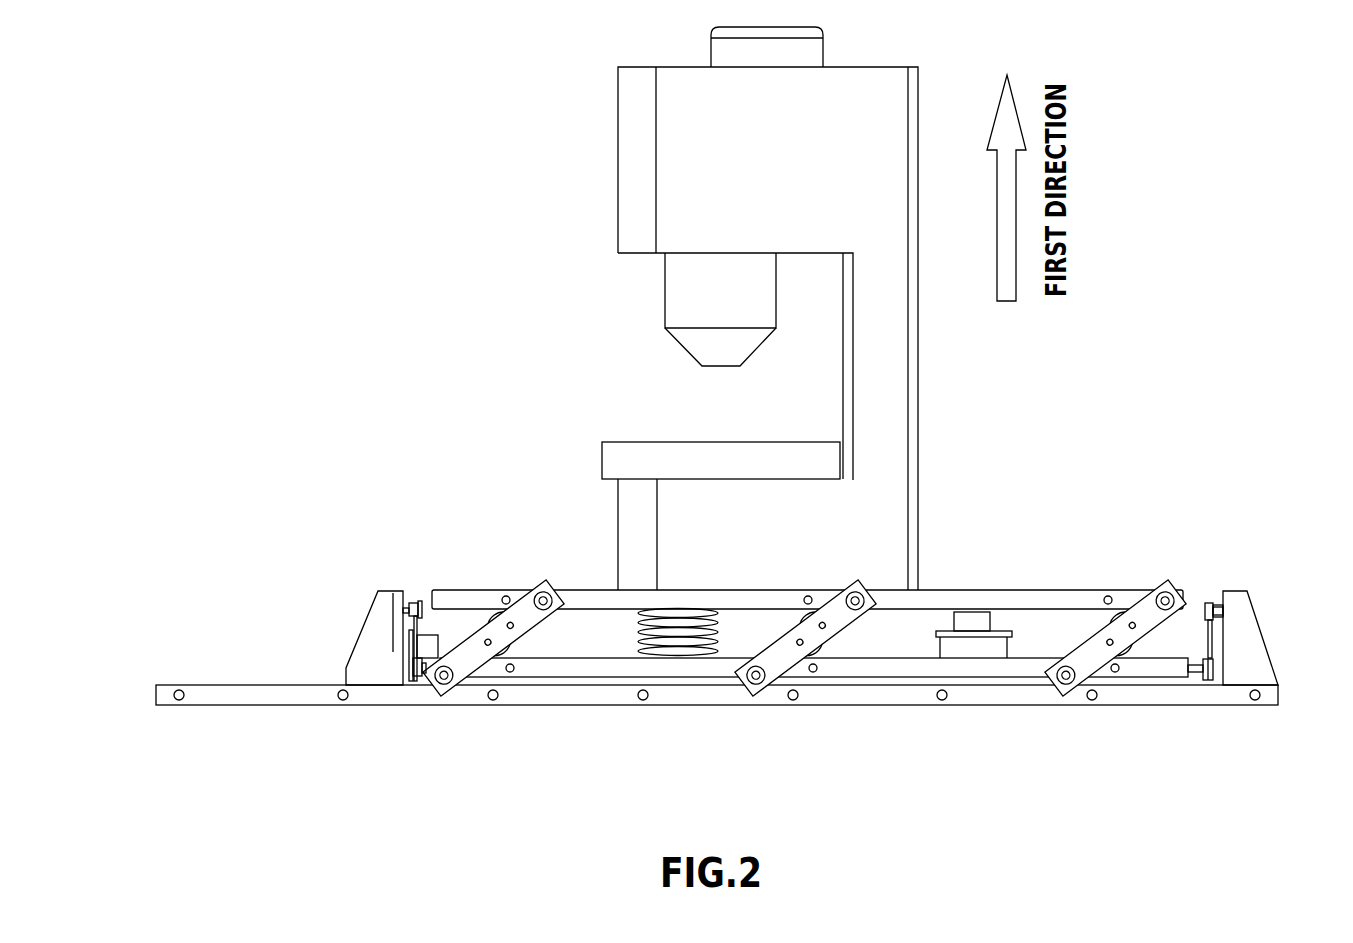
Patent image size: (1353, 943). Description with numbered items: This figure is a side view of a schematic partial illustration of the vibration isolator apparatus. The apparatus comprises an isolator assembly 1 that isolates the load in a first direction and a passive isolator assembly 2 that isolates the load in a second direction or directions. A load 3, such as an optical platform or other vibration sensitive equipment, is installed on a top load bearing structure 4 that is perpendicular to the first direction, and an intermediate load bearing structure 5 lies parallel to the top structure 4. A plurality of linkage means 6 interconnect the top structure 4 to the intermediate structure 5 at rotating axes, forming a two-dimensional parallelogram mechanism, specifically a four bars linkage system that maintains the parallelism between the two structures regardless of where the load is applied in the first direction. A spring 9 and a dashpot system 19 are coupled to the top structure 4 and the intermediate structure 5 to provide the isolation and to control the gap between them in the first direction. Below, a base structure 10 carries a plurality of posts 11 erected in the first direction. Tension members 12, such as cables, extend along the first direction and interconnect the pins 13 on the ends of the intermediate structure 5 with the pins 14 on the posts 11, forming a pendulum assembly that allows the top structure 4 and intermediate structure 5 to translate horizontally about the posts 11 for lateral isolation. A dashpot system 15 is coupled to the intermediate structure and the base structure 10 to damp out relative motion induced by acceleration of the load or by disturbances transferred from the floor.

The isolator assembly 1 is at (1024, 677).
The passive isolator assembly 2 is at (880, 660).
The load 3 is at (699, 161).
The top load bearing structure 4 is at (588, 602).
The intermediate load bearing structure 5 is at (992, 668).
The linkage means 6 is at (473, 653).
The spring 9 is at (688, 637).
The base structure 10 is at (245, 695).
The posts 11 is at (374, 631).
The tension members 12 is at (415, 620).
The pins 13 is at (1194, 670).
The pins 14 is at (1218, 608).
The dashpot system 15 is at (429, 645).
The dashpot system 19 is at (977, 628).